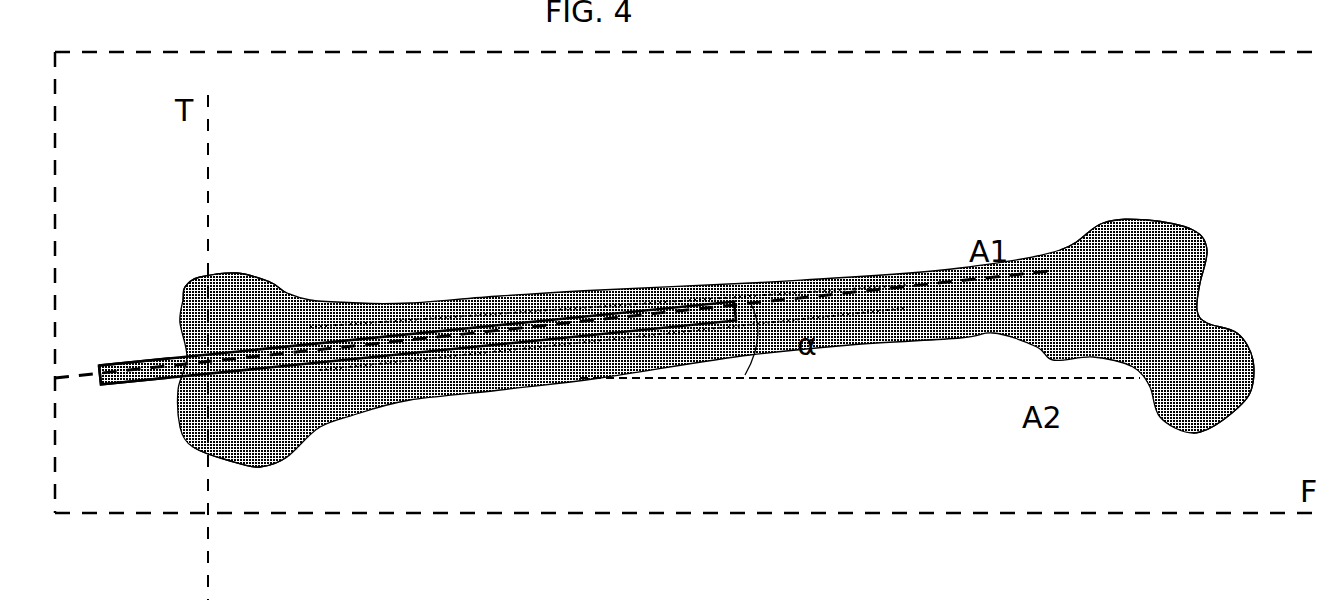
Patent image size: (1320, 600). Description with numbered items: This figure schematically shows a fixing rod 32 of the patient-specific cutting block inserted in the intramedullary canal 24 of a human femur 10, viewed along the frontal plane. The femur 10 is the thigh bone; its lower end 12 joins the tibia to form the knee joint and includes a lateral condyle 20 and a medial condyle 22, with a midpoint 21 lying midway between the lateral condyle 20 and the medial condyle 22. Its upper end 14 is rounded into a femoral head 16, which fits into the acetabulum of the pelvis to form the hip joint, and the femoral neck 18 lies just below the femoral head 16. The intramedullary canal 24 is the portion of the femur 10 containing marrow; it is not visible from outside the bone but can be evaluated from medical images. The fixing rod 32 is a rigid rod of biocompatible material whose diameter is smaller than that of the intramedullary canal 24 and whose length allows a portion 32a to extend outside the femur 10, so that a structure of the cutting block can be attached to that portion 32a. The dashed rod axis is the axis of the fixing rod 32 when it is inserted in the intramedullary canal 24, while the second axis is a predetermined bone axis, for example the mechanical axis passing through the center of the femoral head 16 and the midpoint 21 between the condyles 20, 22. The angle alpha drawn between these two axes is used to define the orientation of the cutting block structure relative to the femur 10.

The femur 10 is at (435, 238).
The lower end 12 is at (238, 305).
The upper end 14 is at (1145, 248).
The femoral head 16 is at (1213, 360).
The femoral neck 18 is at (1197, 320).
The lateral condyle 20 is at (187, 288).
The midpoint 21 is at (180, 382).
The medial condyle 22 is at (225, 462).
The intramedullary canal 24 is at (835, 283).
The fixing rod 32 is at (453, 333).
The portion 32a is at (167, 357).